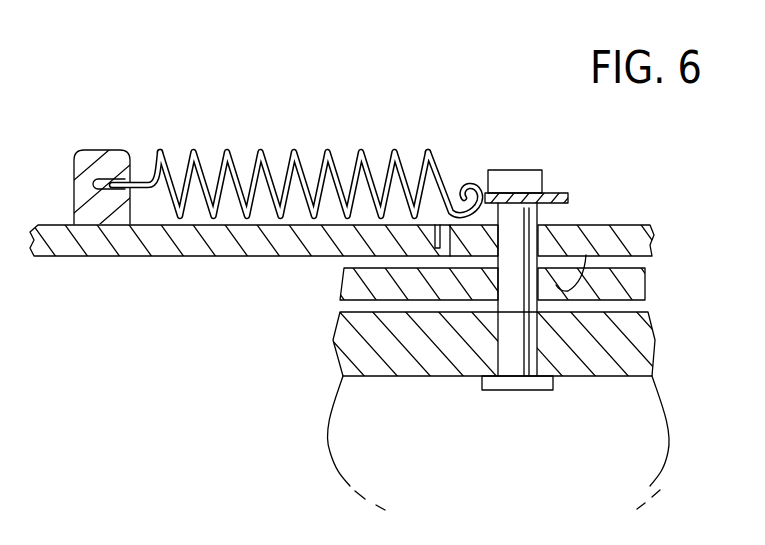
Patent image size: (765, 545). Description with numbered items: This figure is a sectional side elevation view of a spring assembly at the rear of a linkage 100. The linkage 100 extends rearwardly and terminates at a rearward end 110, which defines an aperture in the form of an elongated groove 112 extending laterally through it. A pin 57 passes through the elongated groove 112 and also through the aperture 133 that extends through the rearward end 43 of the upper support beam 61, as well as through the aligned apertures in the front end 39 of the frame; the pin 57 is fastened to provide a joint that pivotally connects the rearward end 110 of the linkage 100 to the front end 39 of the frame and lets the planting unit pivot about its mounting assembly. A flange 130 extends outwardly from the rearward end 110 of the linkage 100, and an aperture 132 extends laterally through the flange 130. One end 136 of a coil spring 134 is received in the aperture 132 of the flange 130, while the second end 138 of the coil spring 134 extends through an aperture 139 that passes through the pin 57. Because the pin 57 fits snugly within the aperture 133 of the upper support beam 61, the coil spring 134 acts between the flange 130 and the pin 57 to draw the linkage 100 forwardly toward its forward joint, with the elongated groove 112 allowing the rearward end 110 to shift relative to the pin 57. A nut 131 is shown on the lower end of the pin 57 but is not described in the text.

The flange 130 is at (72, 156).
The aperture 132 is at (101, 178).
The coil spring 134 is at (362, 148).
The end of coil spring 136 is at (150, 189).
The second end of coil spring 138 is at (462, 221).
The elongated groove 112 is at (438, 223).
The aperture 139 is at (494, 192).
The pin 57 is at (521, 168).
The aperture 133 is at (586, 255).
The rearward end 43 is at (630, 268).
The upper support beam 61 is at (649, 288).
The front end 39 is at (581, 378).
The nut 131 is at (525, 392).
The rearward end 110 is at (78, 258).
The linkage 100 is at (333, 275).